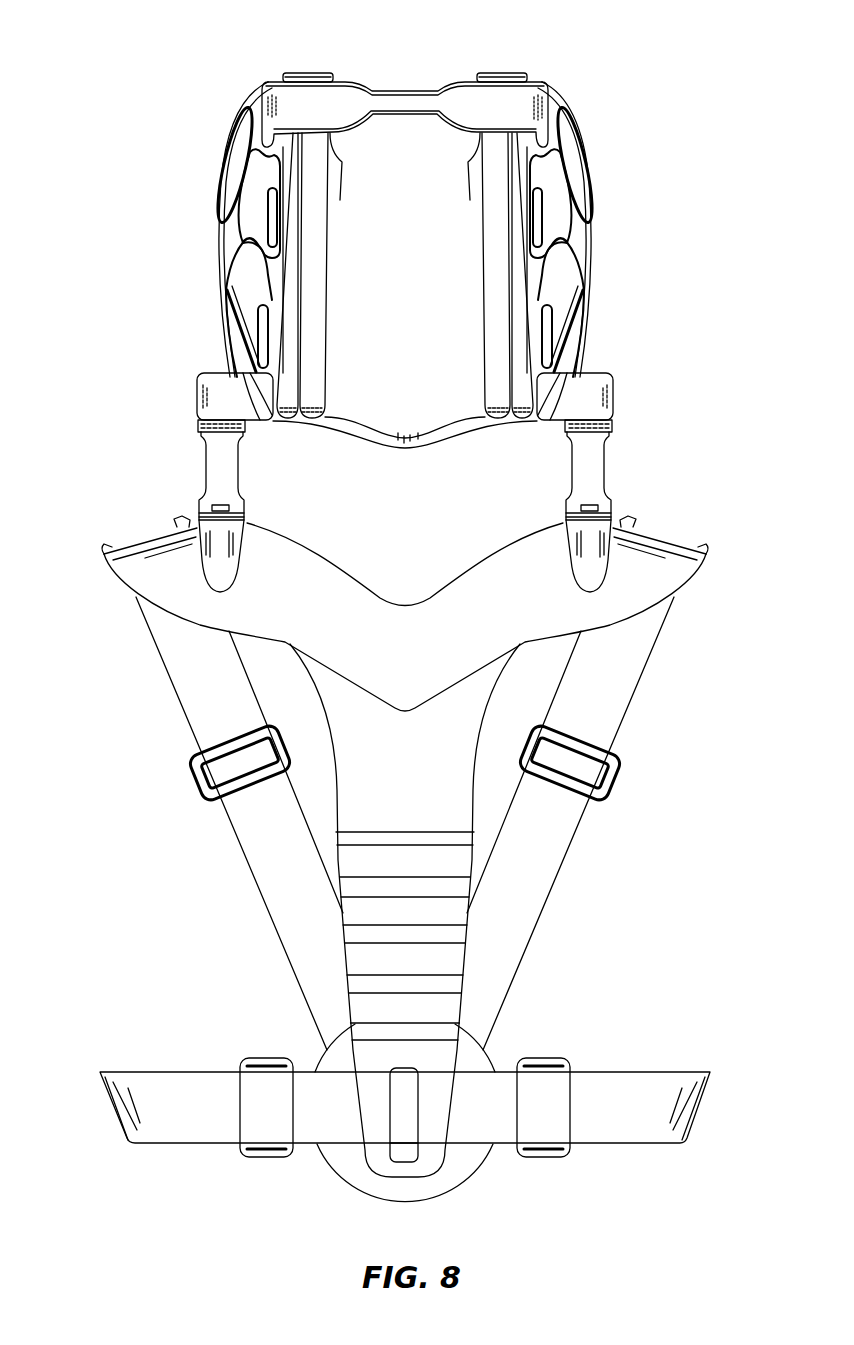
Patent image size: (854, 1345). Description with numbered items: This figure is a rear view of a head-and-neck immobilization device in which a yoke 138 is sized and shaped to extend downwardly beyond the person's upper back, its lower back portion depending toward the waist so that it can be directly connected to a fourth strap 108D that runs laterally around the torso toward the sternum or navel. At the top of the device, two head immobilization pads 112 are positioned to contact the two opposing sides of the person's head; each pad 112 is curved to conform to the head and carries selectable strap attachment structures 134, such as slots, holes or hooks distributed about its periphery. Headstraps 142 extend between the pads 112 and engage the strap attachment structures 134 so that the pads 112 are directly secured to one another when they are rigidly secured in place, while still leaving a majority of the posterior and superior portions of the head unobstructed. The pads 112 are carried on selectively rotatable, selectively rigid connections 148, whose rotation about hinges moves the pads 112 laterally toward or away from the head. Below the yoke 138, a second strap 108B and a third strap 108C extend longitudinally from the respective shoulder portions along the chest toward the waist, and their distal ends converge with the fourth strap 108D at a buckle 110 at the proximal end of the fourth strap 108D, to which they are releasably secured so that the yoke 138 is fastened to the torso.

The headstraps 142 is at (402, 100).
The head immobilization pads 112 is at (203, 239).
The selectable strap attachment structures 134 is at (266, 207).
The selectively rotatable, selectively rigid connections 148 is at (222, 470).
The yoke 138 is at (402, 585).
The third strap 108C is at (200, 683).
The second strap 108B is at (605, 707).
The buckle 110 is at (492, 1063).
The fourth strap 108D is at (655, 1098).